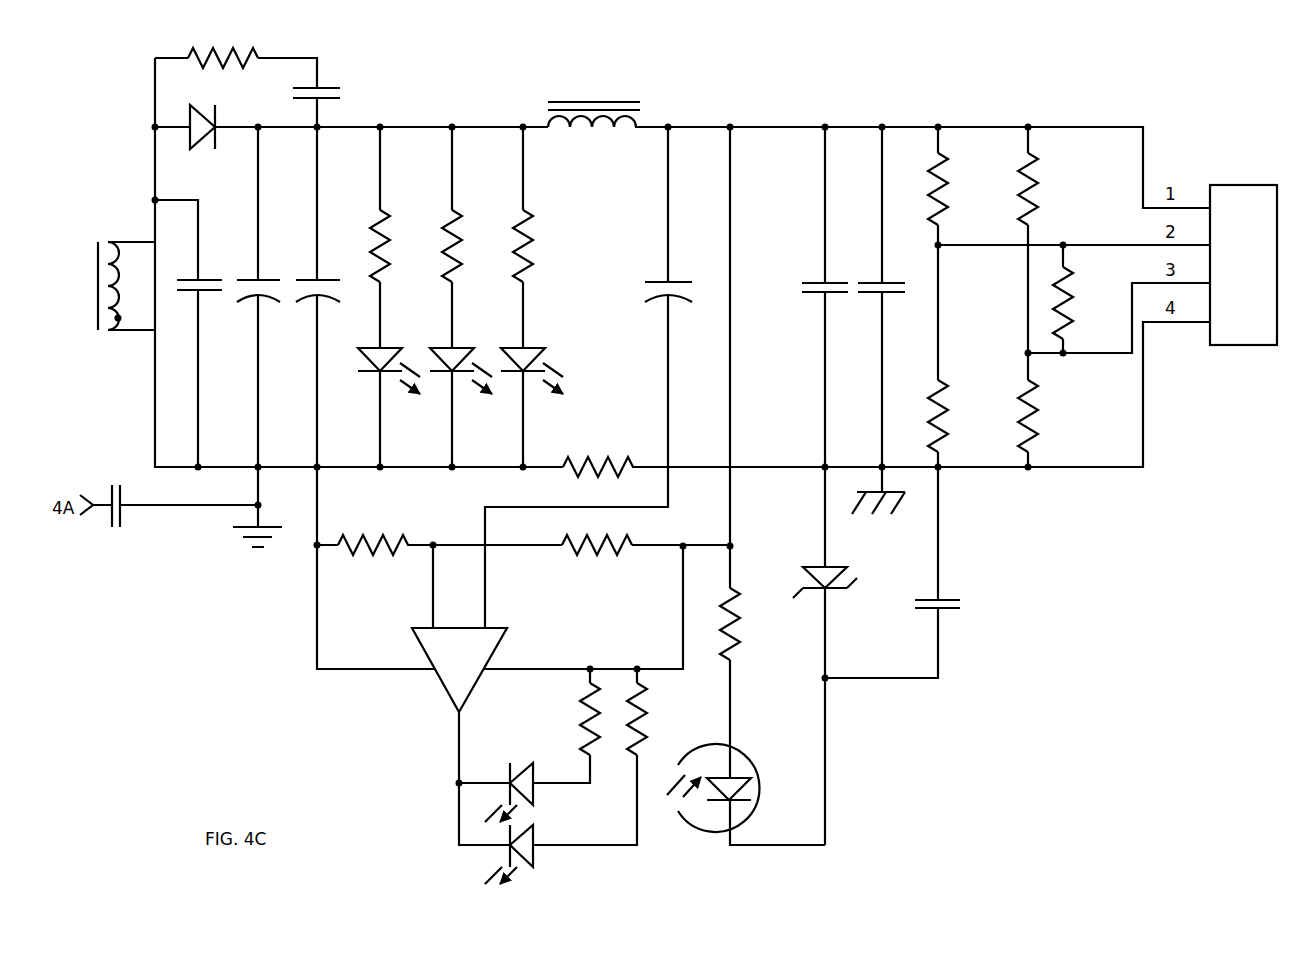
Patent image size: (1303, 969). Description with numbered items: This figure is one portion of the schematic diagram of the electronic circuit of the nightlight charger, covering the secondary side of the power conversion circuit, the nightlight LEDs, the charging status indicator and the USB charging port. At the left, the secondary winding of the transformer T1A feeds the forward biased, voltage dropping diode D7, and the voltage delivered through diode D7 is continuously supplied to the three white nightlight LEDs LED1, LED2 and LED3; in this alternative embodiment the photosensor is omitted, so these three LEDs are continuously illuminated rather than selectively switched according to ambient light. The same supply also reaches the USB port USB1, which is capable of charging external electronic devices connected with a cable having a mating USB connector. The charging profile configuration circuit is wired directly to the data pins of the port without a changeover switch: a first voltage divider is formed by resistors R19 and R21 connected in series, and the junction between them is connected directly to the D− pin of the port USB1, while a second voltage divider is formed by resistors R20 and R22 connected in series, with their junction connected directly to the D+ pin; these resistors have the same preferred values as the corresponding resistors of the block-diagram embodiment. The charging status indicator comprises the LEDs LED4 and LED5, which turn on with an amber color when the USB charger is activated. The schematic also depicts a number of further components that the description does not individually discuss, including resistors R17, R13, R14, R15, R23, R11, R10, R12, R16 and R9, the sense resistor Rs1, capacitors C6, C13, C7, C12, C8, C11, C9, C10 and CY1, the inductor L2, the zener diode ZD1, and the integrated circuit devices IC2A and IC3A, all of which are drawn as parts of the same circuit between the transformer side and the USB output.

The resistor 22R R17 is at (223, 57).
The capacitor 102P/50V C6 is at (360, 77).
The voltage dropping diode D7 is at (217, 148).
The transformer T1A is at (114, 273).
The capacitor 22P/50V C13 is at (191, 320).
The capacitor 220uF/10V C7 is at (254, 320).
The capacitor 220uF/10V C12 is at (314, 320).
The resistor 3K R13 is at (358, 245).
The resistor 3K 1/8W R14 is at (428, 260).
The resistor 3K R15 is at (501, 245).
The LED LED1 is at (373, 385).
The LED LED2 is at (446, 385).
The LED LED3 is at (517, 385).
The choke or jumper wire L2 is at (599, 131).
The capacitor 47uF/10V C8 is at (664, 323).
The capacitor 470P/50V C11 is at (818, 324).
The capacitor 104M/50V C9 is at (875, 324).
The resistor R19 is at (968, 189).
The resistor R20 is at (1050, 189).
The resistor NC R23 is at (1083, 302).
The resistor R21 is at (968, 416).
The resistor R22 is at (1058, 416).
The USB port USB1 is at (1243, 266).
The sense resistor 0.20R 1/2W Rs1 is at (613, 467).
The Y capacitor 102M/400V CY1 is at (142, 509).
The resistor 1K 1% R11 is at (373, 543).
The resistor 470K 1% R10 is at (601, 543).
The operational amplifier SGM321 IC2A is at (423, 674).
The resistor 2K R12 is at (565, 719).
The resistor 2K R16 is at (657, 719).
The LED LED4 is at (534, 790).
The LED LED5 is at (534, 852).
The resistor 100R R9 is at (757, 623).
The zener diode 4.3V ZD1 is at (846, 580).
The capacitor 104M/50V C10 is at (982, 596).
The optocoupler PC817 IC3A is at (736, 773).